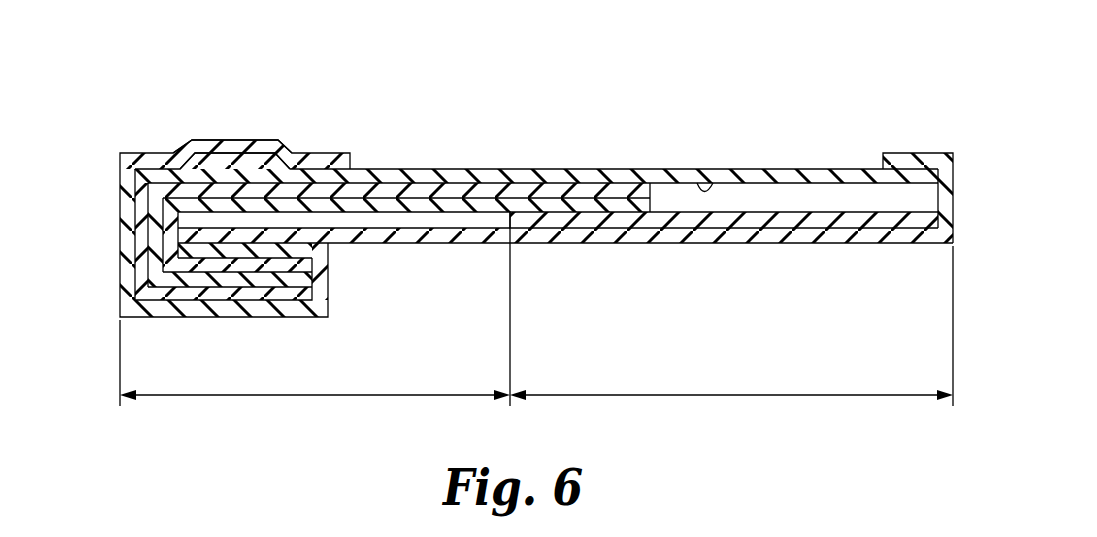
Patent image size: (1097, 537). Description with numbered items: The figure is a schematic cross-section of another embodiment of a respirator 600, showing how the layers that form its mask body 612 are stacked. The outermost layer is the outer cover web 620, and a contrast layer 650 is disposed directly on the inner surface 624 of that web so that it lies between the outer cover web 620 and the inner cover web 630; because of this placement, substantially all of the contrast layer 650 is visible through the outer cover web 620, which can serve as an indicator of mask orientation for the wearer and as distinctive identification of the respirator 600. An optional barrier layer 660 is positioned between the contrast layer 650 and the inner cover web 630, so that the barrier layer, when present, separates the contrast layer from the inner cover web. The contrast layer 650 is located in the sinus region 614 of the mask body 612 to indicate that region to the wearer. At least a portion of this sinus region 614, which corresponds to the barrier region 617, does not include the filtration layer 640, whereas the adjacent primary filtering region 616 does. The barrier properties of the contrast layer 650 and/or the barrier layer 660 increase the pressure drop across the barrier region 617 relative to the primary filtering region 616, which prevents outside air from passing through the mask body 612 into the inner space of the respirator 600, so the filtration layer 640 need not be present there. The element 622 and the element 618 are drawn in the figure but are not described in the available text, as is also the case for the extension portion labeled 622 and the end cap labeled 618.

The respirator 600 is at (876, 45).
The mask body 612 is at (868, 145).
The sinus region 614 is at (197, 112).
The primary filtering region 616 is at (698, 399).
The barrier region 617 is at (318, 399).
The first end cap portion 618 is at (104, 160).
The outer cover web 620 is at (609, 178).
The extension of first layer 622 is at (773, 166).
The inner surface 624 is at (713, 183).
The inner cover web 630 is at (637, 236).
The filtration layer 640 is at (800, 222).
The contrast layer 650 is at (421, 190).
The barrier layer 660 is at (408, 205).